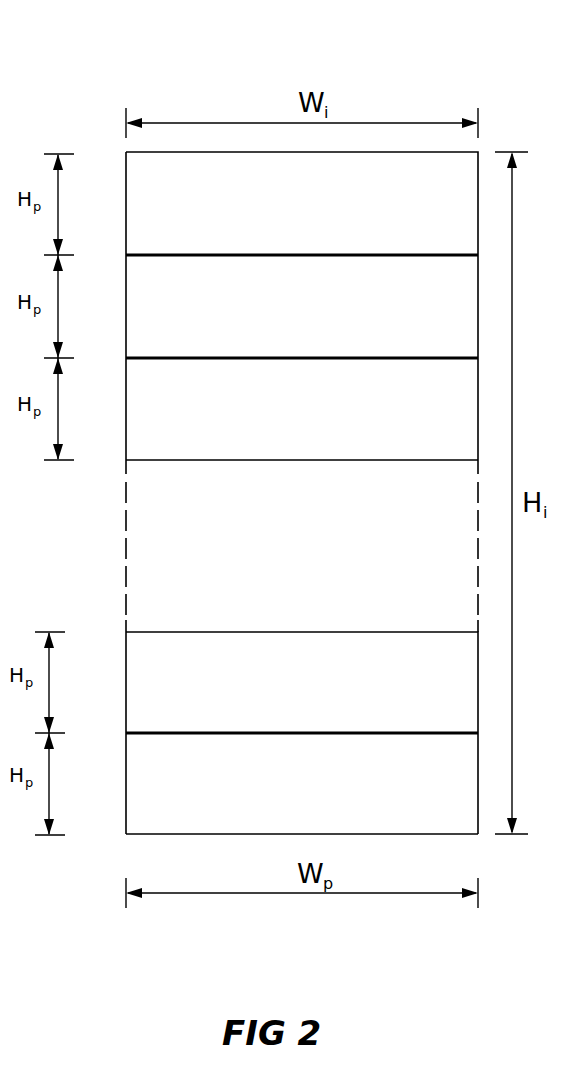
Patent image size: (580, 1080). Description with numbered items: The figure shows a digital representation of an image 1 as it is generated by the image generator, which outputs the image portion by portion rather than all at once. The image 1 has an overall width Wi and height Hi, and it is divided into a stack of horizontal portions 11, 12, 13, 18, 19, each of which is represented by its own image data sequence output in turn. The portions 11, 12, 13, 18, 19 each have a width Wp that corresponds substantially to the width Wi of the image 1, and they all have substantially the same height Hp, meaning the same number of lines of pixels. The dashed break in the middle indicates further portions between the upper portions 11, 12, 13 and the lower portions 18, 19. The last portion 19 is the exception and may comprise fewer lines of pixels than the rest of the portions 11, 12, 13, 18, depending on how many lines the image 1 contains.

The digital representation of the image 1 is at (76, 79).
The portion of the digital representation of the image 11 is at (137, 232).
The portion of the digital representation of the image 12 is at (135, 316).
The portion of the digital representation of the image 13 is at (136, 440).
The portion of the digital representation of the image 18 is at (139, 704).
The last portion of the digital representation of the image 19 is at (138, 806).